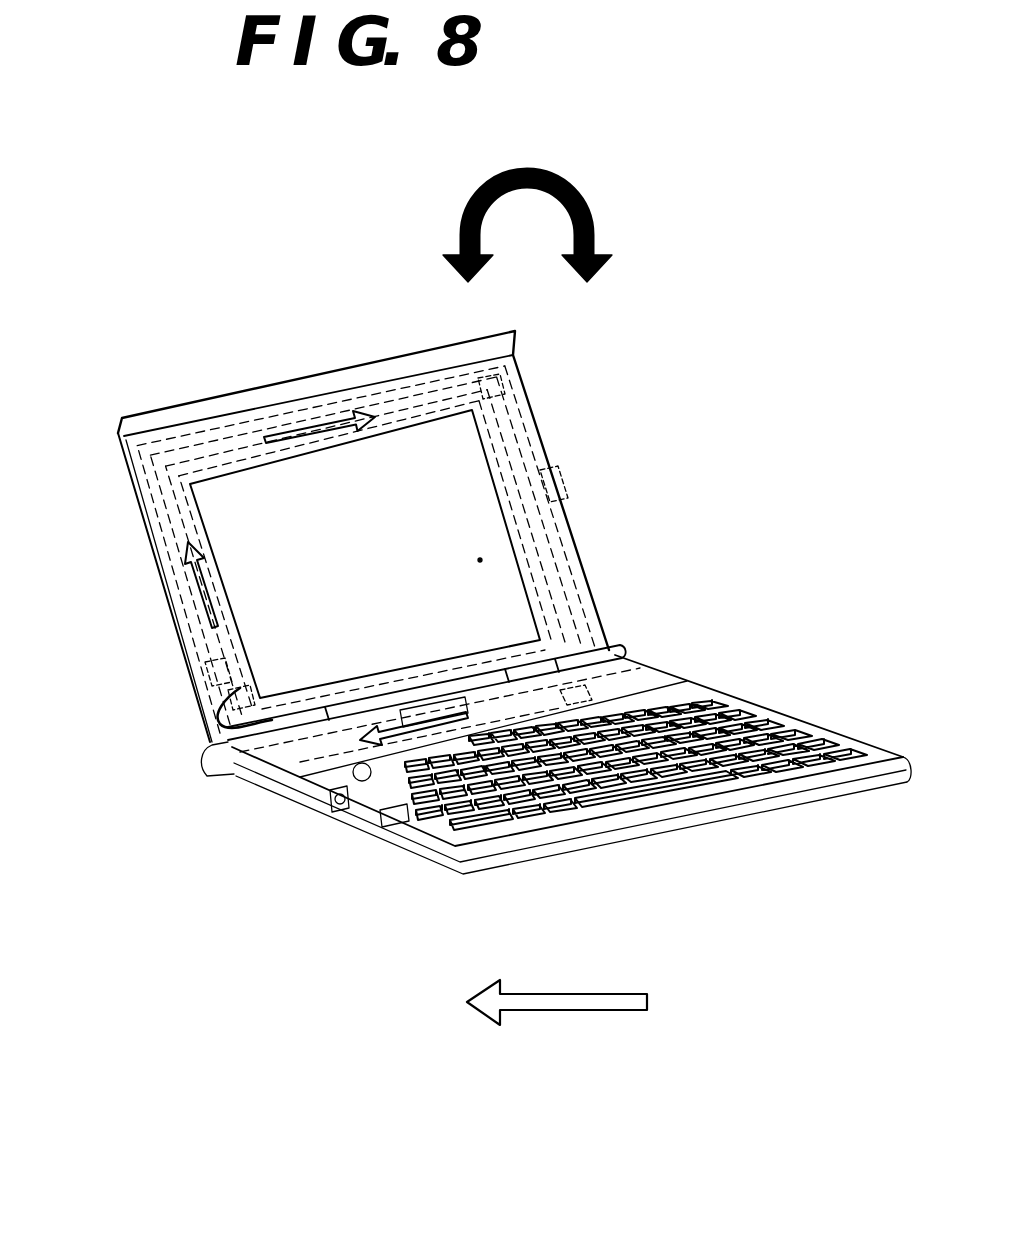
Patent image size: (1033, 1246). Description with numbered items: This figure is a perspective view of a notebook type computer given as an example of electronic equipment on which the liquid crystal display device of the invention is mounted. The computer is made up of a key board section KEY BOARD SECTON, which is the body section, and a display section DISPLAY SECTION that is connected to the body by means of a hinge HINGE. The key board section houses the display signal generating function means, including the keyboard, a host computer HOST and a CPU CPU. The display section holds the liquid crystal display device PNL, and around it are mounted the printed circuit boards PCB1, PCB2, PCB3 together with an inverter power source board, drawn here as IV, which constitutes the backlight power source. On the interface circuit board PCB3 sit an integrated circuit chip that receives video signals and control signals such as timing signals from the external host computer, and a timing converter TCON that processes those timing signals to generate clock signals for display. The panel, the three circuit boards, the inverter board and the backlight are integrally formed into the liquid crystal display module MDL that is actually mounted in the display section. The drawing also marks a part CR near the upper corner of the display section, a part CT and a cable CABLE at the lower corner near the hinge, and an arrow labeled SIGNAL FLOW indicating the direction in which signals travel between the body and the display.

The display section DISPLAY SECTION is at (207, 402).
The printed circuit board PCB1 is at (425, 402).
The printed circuit board PCB2 is at (490, 448).
The interface circuit board PCB3 is at (182, 527).
The connector CR is at (505, 377).
The inverter IV is at (540, 484).
The liquid crystal display module MDL is at (585, 625).
The liquid crystal display device PNL is at (365, 554).
The timing converter TCON is at (252, 708).
The connector terminal CT is at (218, 660).
The cable CABLE is at (212, 710).
The hinge HINGE is at (285, 725).
The host computer HOST is at (600, 680).
The element CPU is at (628, 670).
The key board section KEY BOARD SECTON is at (713, 793).
The signal flow direction SIGNAL FLOW is at (571, 1031).